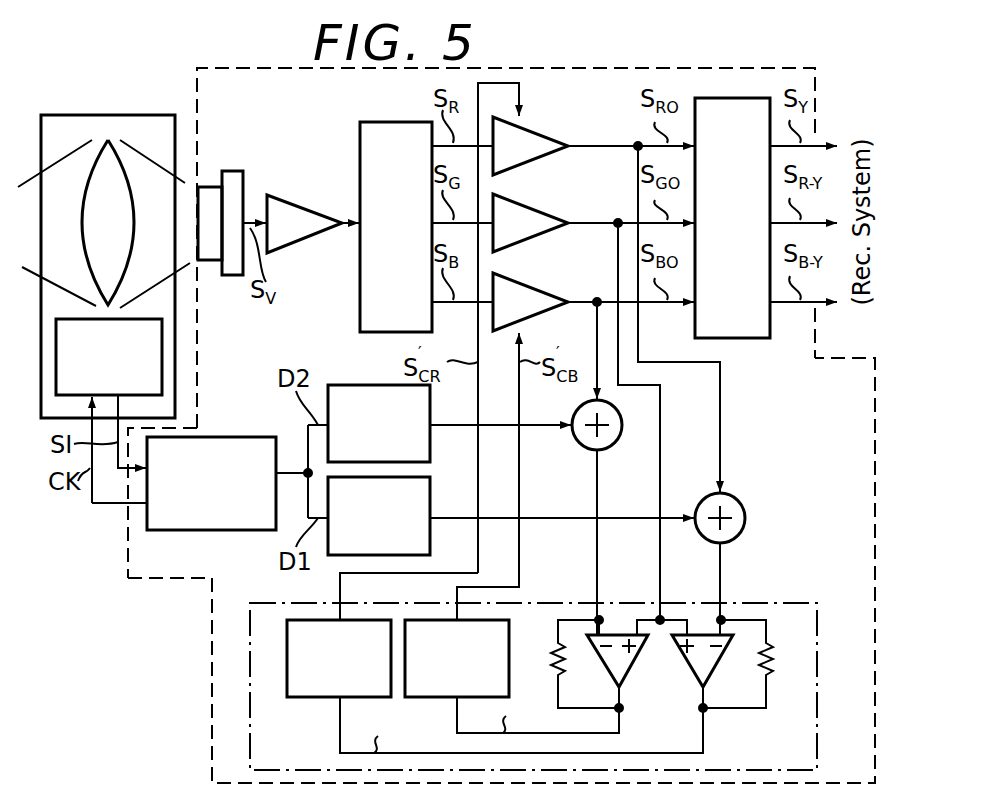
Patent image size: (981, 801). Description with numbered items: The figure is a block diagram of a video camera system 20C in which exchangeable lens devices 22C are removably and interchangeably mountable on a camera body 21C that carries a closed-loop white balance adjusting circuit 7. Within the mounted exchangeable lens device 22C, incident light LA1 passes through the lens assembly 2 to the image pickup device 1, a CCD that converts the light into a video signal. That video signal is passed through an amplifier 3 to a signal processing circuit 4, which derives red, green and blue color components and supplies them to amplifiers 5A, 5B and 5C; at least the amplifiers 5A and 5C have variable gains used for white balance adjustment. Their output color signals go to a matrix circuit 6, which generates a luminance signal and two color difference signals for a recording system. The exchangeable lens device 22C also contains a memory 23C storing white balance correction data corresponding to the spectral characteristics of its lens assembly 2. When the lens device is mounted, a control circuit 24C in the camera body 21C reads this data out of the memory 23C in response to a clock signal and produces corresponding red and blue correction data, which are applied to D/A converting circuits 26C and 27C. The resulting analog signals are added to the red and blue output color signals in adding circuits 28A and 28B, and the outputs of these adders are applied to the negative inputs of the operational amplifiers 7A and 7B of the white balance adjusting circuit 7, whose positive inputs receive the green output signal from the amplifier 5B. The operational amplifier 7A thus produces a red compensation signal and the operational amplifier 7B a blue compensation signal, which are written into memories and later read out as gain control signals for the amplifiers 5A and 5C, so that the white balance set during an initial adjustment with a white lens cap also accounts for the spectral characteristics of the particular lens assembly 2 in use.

The image pickup device 1 is at (233, 171).
The lens assembly 2 is at (86, 268).
The amplifier 3 is at (313, 210).
The signal processing circuit 4 is at (360, 132).
The amplifier 5A is at (535, 130).
The amplifier 5B is at (535, 207).
The amplifier 5C is at (535, 286).
The matrix circuit 6 is at (748, 340).
The white balance adjusting circuit 7 is at (550, 686).
The operational amplifier 7A is at (688, 677).
The operational amplifier 7B is at (637, 652).
The video camera system 20C is at (166, 584).
The camera body 21C is at (210, 655).
The exchangeable lens device 22C is at (97, 112).
The memory 23C is at (162, 343).
The control circuit 24C is at (213, 531).
The D/A converting circuit 26C is at (430, 528).
The D/A converting circuit 27C is at (352, 385).
The adding circuit 28A is at (745, 520).
The adding circuit 28B is at (622, 428).
The incident light LA1 is at (150, 158).